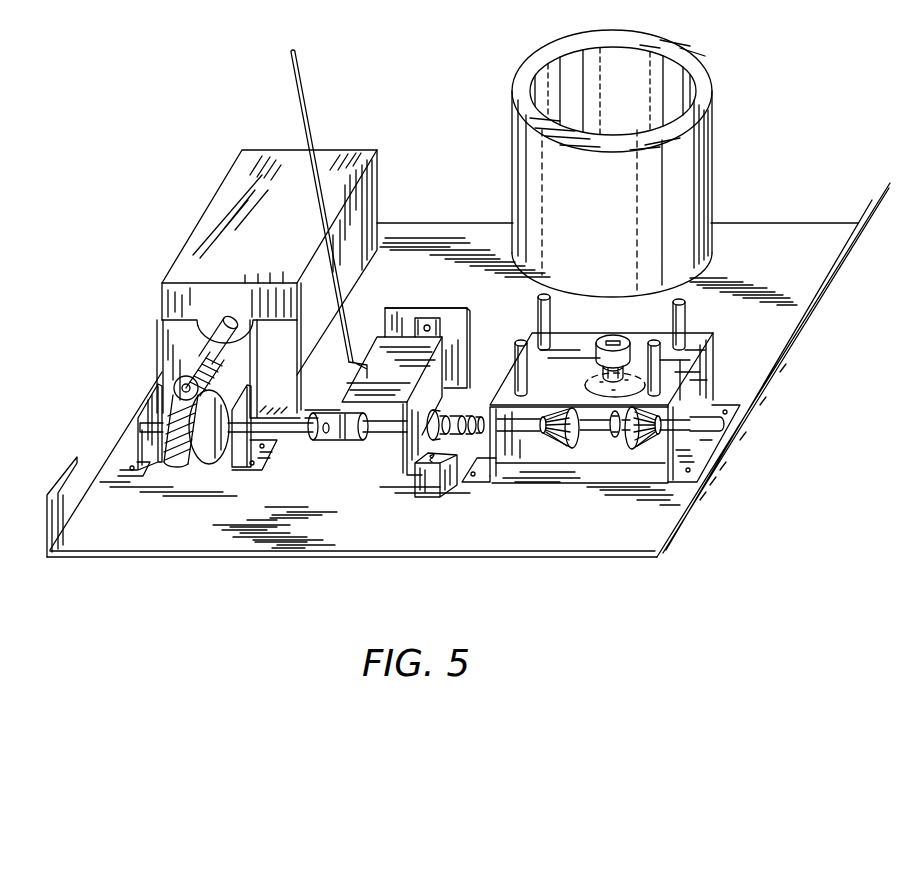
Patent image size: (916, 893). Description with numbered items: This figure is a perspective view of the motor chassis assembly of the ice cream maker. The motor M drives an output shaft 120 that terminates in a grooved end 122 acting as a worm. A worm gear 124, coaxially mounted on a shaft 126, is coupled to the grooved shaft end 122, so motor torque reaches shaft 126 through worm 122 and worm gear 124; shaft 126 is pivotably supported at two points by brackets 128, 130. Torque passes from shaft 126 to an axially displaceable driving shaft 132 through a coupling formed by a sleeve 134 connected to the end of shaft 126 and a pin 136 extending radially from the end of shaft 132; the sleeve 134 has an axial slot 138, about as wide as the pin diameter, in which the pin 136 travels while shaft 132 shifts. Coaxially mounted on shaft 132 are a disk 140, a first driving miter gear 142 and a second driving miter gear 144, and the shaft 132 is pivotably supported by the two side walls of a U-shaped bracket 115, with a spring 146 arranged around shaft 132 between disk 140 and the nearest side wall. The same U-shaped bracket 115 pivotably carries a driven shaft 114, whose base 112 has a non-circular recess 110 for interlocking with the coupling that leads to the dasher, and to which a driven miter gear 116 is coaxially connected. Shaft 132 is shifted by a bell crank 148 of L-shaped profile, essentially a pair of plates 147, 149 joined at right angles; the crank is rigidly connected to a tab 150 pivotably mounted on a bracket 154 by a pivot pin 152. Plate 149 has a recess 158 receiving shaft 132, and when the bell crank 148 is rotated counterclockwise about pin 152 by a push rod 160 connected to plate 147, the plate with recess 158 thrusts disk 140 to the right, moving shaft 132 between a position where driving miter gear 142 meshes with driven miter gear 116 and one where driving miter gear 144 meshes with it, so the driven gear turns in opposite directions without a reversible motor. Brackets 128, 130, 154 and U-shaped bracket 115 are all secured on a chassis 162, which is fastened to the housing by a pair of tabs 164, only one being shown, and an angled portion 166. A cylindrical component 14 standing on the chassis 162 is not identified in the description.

The cylindrical container 14 is at (722, 156).
The recess 110 is at (612, 341).
The base 112 is at (597, 357).
The driven shaft 114 is at (600, 369).
The U-shaped bracket 115 is at (707, 367).
The driven miter gear 116 is at (613, 412).
The output shaft 120 is at (218, 322).
The grooved end 122 is at (183, 372).
The worm gear 124 is at (187, 462).
The shaft 126 is at (280, 438).
The bracket 128 is at (137, 410).
The bracket 130 is at (228, 472).
The axially displaceable shaft 132 is at (383, 434).
The sleeve 134 is at (318, 410).
The pin 136 is at (318, 441).
The axial slot 138 is at (331, 437).
The disk 140 is at (432, 390).
The first driving miter gear 142 is at (567, 448).
The second driving miter gear 144 is at (640, 452).
The spring 146 is at (458, 420).
The plate 147 is at (383, 345).
The bell crank 148 is at (333, 391).
The plate 149 is at (445, 372).
The tab 150 is at (443, 332).
The pivot pin 152 is at (426, 326).
The bracket 154 is at (402, 314).
The recess 158 is at (420, 402).
The push rod 160 is at (303, 92).
The chassis 162 is at (452, 390).
The tabs 164 is at (86, 444).
The angled portion 166 is at (690, 522).
The motor M is at (243, 158).